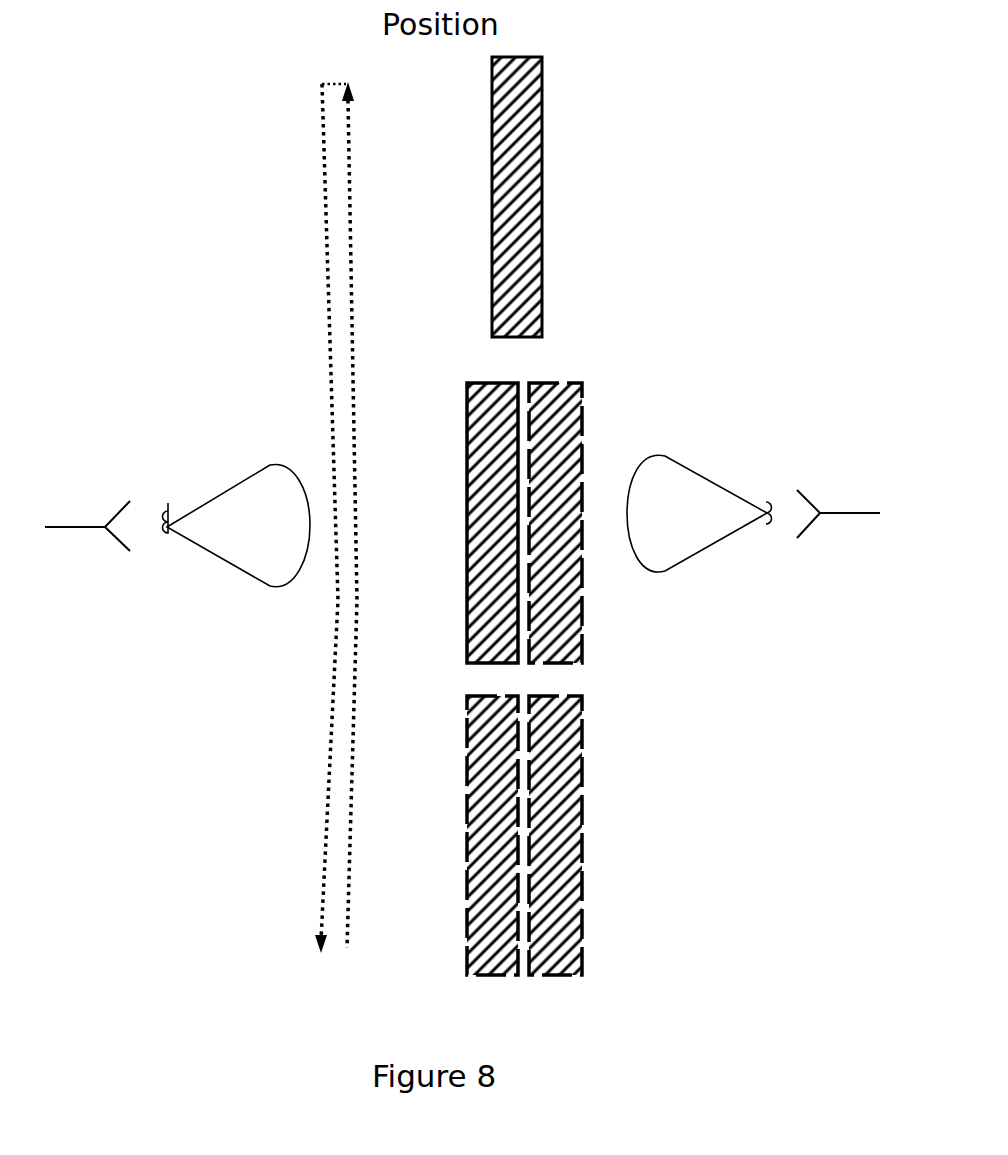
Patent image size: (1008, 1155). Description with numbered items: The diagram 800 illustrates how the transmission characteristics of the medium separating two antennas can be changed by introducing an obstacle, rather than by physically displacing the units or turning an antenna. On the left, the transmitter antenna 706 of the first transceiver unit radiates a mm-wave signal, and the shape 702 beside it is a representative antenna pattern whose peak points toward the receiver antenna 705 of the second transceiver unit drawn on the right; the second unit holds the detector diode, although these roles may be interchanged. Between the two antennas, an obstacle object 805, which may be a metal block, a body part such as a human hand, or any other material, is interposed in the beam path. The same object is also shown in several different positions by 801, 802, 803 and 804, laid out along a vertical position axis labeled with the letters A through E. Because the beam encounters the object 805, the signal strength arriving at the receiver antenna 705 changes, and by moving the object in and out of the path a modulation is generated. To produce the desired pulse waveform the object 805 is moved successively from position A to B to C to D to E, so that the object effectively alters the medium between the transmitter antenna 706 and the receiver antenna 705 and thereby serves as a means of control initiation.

The diagram 800 is at (208, 842).
The obstacle object position 801 is at (543, 188).
The obstacle object position 802 is at (575, 655).
The obstacle object position 803 is at (552, 868).
The obstacle object position 804 is at (472, 778).
The obstacle object 805 is at (483, 442).
The antenna pattern 702 is at (242, 475).
The receiver antenna 705 is at (858, 503).
The transmitter antenna 706 is at (80, 520).